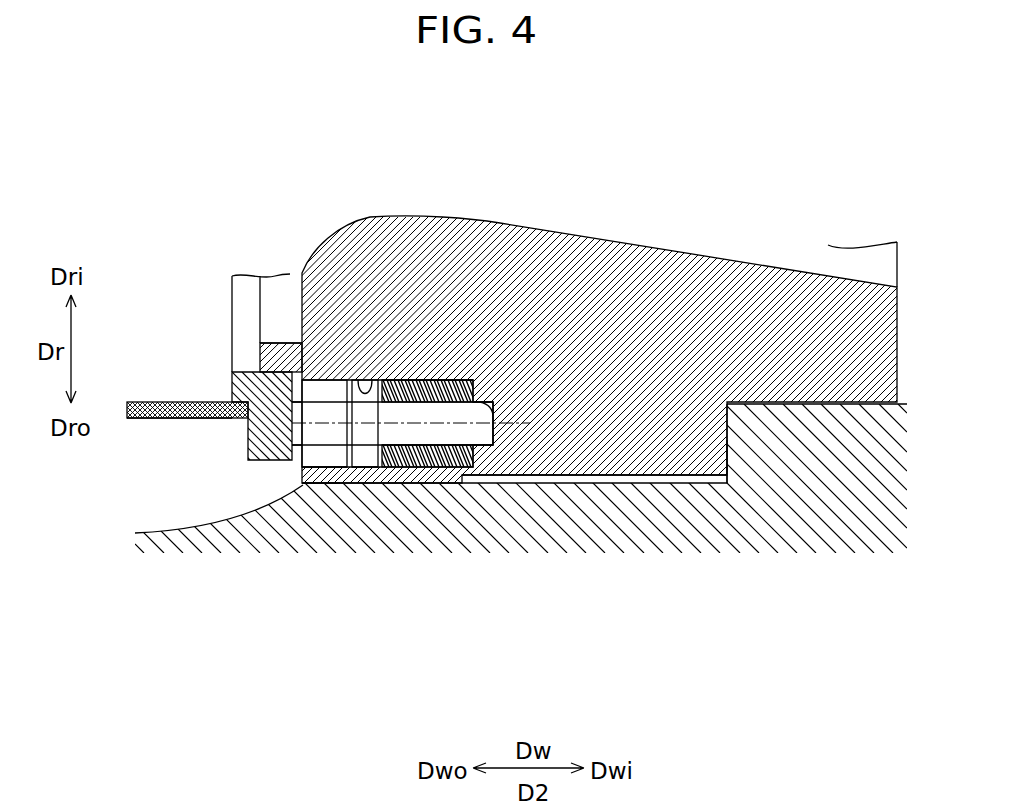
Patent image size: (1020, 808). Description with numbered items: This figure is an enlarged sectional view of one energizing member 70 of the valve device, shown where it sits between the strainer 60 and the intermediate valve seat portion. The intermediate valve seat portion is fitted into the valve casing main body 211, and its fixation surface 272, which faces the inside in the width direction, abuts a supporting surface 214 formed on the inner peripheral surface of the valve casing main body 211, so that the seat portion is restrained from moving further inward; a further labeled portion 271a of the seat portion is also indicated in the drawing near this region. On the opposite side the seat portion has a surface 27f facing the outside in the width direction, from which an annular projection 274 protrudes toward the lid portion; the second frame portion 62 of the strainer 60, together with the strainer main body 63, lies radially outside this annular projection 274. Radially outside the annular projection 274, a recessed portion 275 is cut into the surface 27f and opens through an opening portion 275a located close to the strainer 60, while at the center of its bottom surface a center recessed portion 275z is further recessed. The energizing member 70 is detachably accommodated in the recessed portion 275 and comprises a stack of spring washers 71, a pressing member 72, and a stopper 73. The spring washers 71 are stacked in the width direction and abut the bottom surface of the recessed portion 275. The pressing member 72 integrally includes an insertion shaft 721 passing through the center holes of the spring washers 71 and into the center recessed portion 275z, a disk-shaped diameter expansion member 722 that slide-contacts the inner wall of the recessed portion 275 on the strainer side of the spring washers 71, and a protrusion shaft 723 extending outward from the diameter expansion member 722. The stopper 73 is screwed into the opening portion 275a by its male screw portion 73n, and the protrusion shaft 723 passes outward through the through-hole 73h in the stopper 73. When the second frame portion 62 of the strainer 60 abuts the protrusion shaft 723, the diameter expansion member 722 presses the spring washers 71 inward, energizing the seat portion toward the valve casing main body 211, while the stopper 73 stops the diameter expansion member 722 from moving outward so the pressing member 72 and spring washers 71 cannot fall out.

The strainer 60 is at (145, 419).
The second frame portion 62 is at (292, 462).
The strainer main body 63 is at (173, 419).
The energizing member 70 is at (410, 379).
The spring washer 71 is at (473, 378).
The pressing member 72 is at (374, 453).
The stopper 73 is at (325, 445).
The through-hole 73h is at (236, 391).
The male screw portion 73n is at (333, 378).
The insertion shaft 721 is at (440, 443).
The diameter expansion member 722 is at (360, 455).
The protrusion shaft 723 is at (300, 470).
The surface 27f is at (333, 470).
The valve casing main body 211 is at (845, 527).
The supporting surface 214 is at (727, 432).
The gap portion 271a is at (450, 443).
The fixation surface 272 is at (731, 451).
The annular projection 274 is at (267, 353).
The recessed portion 275 is at (359, 380).
The opening portion 275a is at (293, 343).
The center recessed portion 275z is at (493, 398).